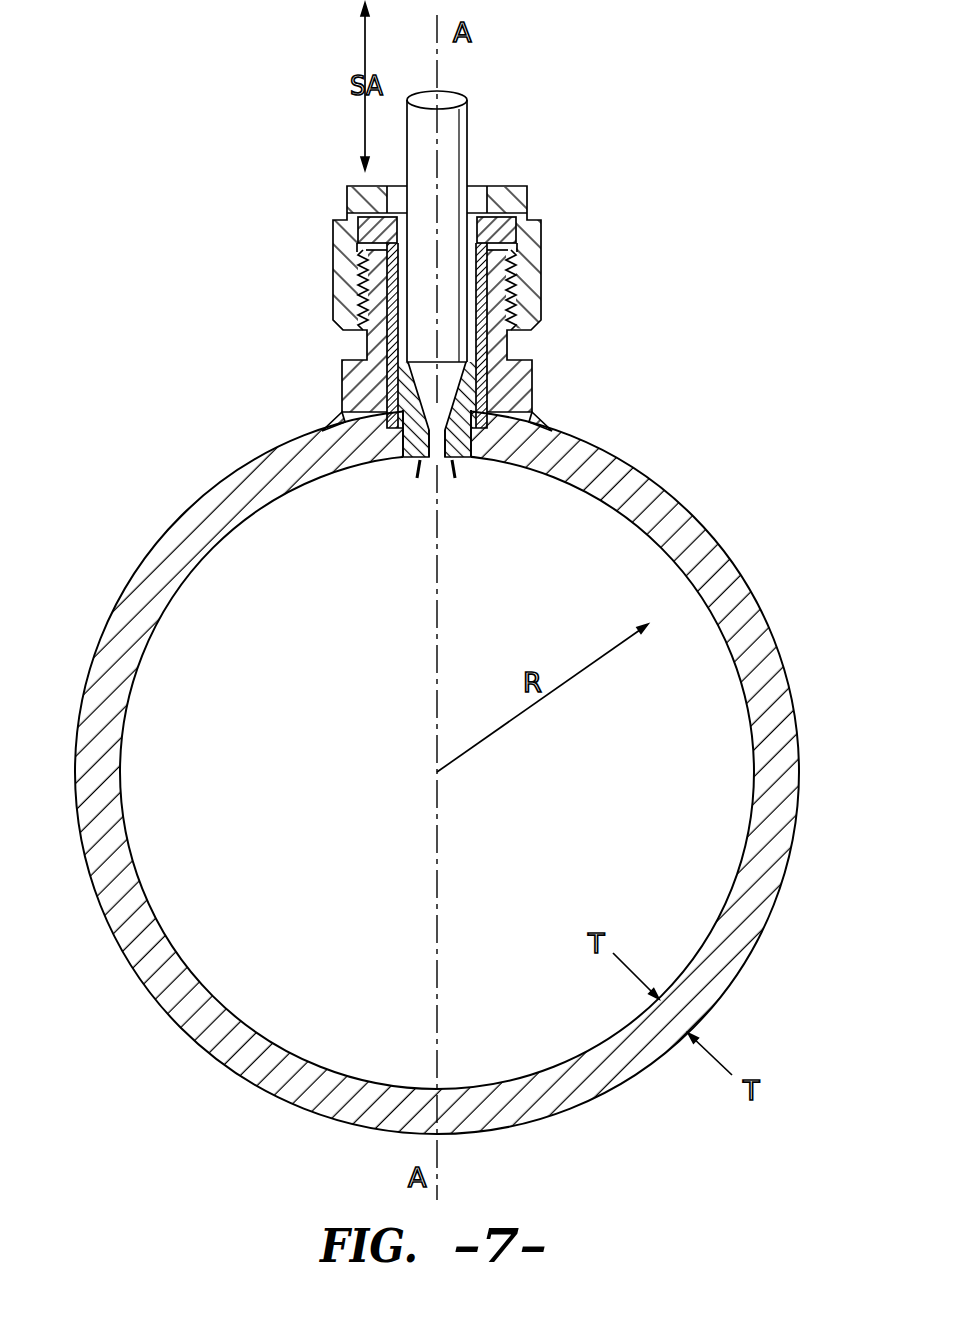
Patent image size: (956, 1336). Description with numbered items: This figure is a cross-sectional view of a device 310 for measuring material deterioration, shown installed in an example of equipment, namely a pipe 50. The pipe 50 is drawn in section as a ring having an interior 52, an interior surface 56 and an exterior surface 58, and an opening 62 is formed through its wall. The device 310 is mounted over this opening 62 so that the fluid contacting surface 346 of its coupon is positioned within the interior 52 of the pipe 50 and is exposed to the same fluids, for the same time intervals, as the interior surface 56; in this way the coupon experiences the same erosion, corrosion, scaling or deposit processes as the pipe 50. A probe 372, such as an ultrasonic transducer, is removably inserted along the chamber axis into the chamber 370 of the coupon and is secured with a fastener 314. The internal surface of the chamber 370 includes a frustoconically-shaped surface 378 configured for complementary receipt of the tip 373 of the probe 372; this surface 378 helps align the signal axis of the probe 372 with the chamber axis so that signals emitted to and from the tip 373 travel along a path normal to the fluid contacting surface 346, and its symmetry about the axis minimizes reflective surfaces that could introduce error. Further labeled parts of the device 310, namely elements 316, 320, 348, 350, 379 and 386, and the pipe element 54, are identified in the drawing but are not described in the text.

The device for measuring material deterioration 310 is at (383, 256).
The fastener 314 is at (295, 237).
The fitting body 316 is at (540, 388).
The compression nut 320 is at (540, 248).
The fluid contacting surface 346 is at (420, 462).
The base flange 348 is at (540, 411).
The ferrule 350 is at (540, 290).
The chamber 370 is at (540, 345).
The probe 372 is at (452, 128).
The tip 373 is at (424, 402).
The frustoconically-shaped surface 378 is at (388, 428).
The passage 379 is at (417, 350).
The cap nut 386 is at (538, 226).
The pipe 50 is at (437, 772).
The interior 52 is at (203, 620).
The pipe wall 54 is at (176, 1163).
The interior surface 56 is at (124, 766).
The exterior surface 58 is at (168, 1032).
The opening 62 is at (453, 462).